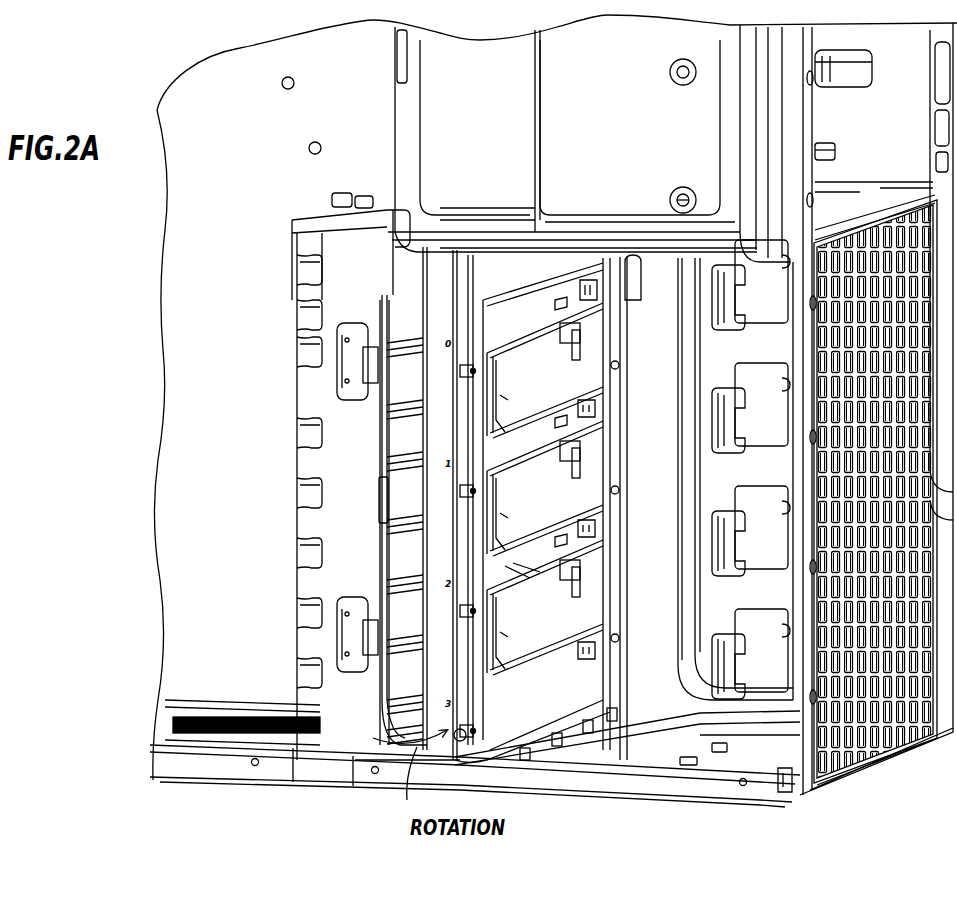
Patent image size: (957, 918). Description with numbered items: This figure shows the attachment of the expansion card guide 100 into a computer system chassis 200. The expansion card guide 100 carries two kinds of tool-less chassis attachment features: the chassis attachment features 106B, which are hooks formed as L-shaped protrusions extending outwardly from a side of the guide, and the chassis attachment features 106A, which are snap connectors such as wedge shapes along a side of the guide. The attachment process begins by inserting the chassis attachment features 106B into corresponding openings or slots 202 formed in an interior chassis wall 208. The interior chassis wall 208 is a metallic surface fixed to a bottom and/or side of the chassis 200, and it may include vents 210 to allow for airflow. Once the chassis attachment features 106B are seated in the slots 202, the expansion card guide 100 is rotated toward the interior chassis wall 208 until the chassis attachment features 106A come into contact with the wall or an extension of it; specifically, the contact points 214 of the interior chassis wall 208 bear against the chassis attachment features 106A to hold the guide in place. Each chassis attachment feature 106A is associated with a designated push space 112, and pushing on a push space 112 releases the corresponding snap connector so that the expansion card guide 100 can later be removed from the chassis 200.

The expansion card guide 100 is at (337, 735).
The chassis attachment features 106A is at (377, 362).
The chassis attachment features 106B is at (597, 407).
The push space 112 is at (357, 390).
The computer system chassis 200 is at (603, 783).
The openings (slots) 202 is at (575, 418).
The interior chassis wall 208 is at (513, 563).
The vents 210 is at (557, 394).
The contact points 214 is at (435, 378).